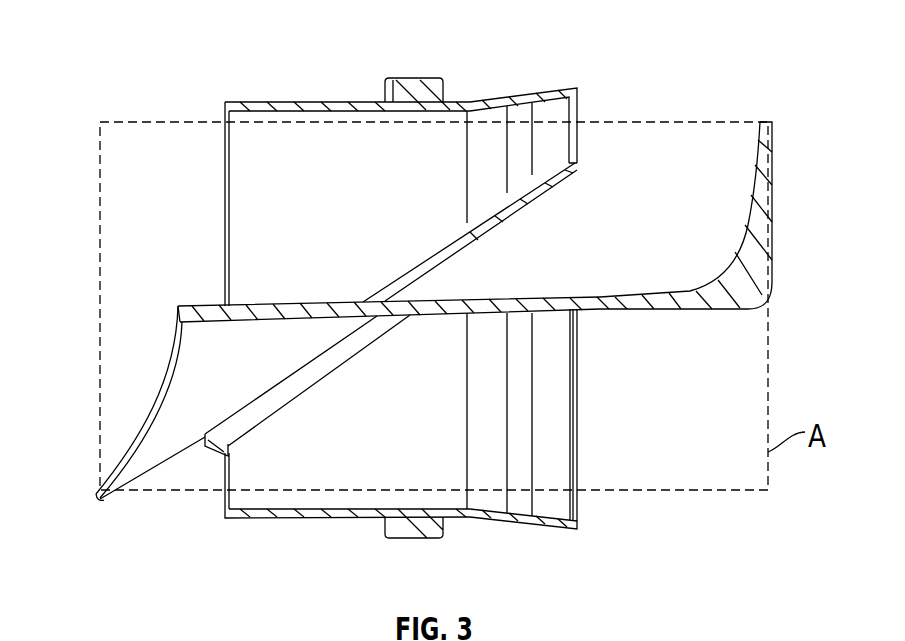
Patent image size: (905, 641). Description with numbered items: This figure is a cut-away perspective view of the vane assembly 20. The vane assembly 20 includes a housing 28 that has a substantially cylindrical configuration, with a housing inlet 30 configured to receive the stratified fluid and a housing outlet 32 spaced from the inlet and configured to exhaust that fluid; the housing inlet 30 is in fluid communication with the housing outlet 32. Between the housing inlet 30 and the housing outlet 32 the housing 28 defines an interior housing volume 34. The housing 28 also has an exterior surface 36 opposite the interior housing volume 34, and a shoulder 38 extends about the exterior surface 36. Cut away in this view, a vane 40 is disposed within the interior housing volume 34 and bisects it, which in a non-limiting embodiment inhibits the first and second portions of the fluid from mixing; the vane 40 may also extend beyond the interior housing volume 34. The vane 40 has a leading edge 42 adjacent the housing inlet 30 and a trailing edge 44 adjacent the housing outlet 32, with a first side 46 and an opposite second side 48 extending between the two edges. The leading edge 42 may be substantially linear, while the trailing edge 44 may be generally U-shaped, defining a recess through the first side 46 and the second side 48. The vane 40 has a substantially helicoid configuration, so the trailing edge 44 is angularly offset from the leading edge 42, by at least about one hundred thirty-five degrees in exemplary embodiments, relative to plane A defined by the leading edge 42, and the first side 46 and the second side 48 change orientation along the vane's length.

The vane assembly 20 is at (684, 40).
The housing 28 is at (486, 95).
The housing inlet 30 is at (572, 422).
The housing outlet 32 is at (225, 256).
The interior housing volume 34 is at (243, 160).
The exterior surface 36 is at (272, 102).
The shoulder 38 is at (417, 78).
The vane 40 is at (607, 318).
The leading edge 42 is at (773, 200).
The trailing edge 44 is at (96, 480).
The first side 46 is at (700, 242).
The second side 48 is at (160, 455).